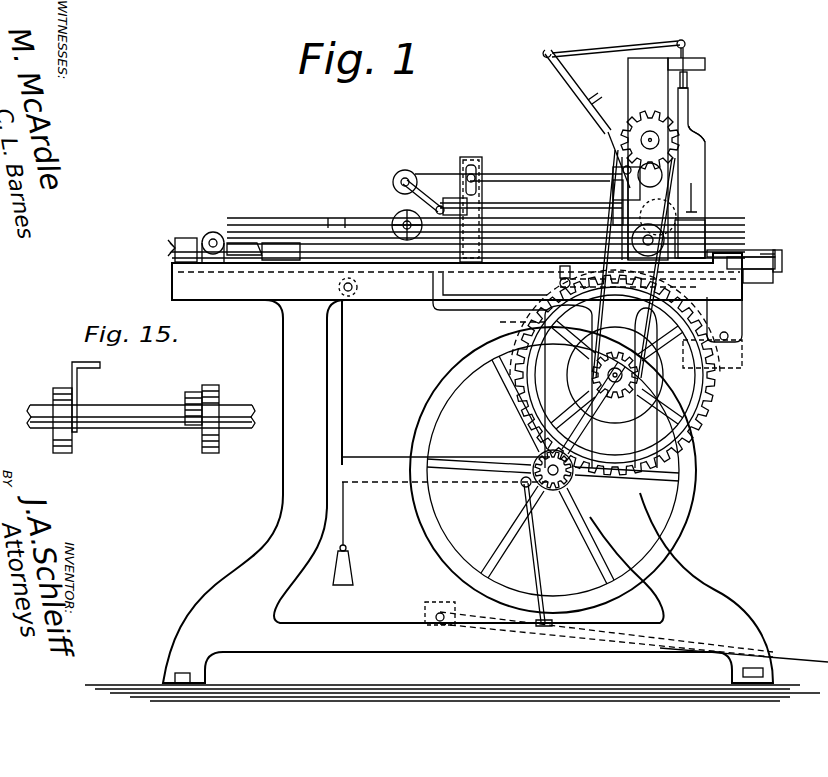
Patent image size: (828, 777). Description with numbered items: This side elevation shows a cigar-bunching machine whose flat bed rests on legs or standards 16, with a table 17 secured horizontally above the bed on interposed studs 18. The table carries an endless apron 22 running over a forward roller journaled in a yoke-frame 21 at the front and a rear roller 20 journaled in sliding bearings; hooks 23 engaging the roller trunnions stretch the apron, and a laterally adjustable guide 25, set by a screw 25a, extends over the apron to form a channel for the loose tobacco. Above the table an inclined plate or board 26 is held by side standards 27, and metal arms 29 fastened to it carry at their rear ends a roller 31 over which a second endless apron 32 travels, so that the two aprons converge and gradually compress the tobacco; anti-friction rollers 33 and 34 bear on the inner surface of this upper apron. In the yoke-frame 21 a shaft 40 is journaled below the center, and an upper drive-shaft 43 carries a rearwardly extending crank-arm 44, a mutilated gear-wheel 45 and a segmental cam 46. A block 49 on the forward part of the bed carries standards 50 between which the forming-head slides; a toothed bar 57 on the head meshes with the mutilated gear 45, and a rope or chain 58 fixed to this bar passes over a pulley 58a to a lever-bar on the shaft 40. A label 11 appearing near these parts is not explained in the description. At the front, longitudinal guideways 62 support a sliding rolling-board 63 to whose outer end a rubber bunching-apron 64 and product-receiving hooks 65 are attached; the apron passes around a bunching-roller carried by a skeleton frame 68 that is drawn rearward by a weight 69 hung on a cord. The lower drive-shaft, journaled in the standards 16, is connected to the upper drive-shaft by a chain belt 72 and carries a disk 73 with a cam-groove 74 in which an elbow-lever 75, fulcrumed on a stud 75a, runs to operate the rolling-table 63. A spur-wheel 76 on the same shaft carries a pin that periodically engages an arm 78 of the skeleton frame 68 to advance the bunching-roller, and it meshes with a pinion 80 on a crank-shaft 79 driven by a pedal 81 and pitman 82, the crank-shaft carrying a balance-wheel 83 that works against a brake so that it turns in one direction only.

In FIG. 1, the legs or standards 16 is at (452, 477).
In FIG. 1, the table 17 is at (362, 238).
In FIG. 1, the studs 18 is at (586, 119).
In FIG. 1, the rear roller 20 is at (210, 232).
In FIG. 1, the yoke-frame 21 is at (663, 159).
In FIG. 1, the endless apron 22 is at (220, 232).
In FIG. 1, the hooks 23 is at (190, 236).
In FIG. 1, the guide 25 is at (486, 215).
In FIG. 1, the screw 25a is at (396, 221).
In FIG. 1, the plate or board 26 is at (531, 206).
In FIG. 1, the side standards 27 is at (482, 158).
In FIG. 1, the metal arms 29 is at (540, 189).
In FIG. 1, the rear roller 31 is at (400, 170).
In FIG. 1, the endless apron 32 is at (590, 171).
In FIG. 1, the anti-friction roller 33 is at (612, 192).
In FIG. 1, the anti-friction roller 34 is at (423, 197).
In FIG. 1, the shaft 40 is at (624, 170).
In FIG. 1, the upper drive-shaft 43 is at (650, 140).
In FIG. 15, the upper drive-shaft 43 is at (141, 407).
In FIG. 15, the crank-arm 44 is at (72, 364).
In FIG. 15, the mutilated gear-wheel 45 is at (222, 398).
In FIG. 15, the segmental cam 46 is at (192, 390).
In FIG. 1, the block 49 is at (716, 254).
In FIG. 1, the standard 50 is at (706, 150).
In FIG. 1, the toothed bar 57 is at (690, 93).
In FIG. 1, the cylinder shoulder 11 is at (697, 120).
In FIG. 1, the rope or chain 58 is at (616, 37).
In FIG. 1, the pulley 58a is at (686, 44).
In FIG. 1, the guideways 62 is at (763, 280).
In FIG. 1, the rolling-board 63 is at (751, 264).
In FIG. 1, the bunching-apron 64 is at (768, 248).
In FIG. 1, the hooks 65 is at (784, 258).
In FIG. 1, the skeleton frame 68 is at (490, 303).
In FIG. 1, the weight 69 is at (354, 533).
In FIG. 1, the belt 72 is at (570, 280).
In FIG. 1, the disk or solid wheel 73 is at (600, 378).
In FIG. 1, the cam-groove 74 is at (560, 386).
In FIG. 1, the elbow-lever 75 is at (726, 319).
In FIG. 1, the stud 75a is at (729, 354).
In FIG. 1, the spur-wheel 76 is at (726, 392).
In FIG. 1, the arm 78 is at (630, 318).
In FIG. 1, the crank-shaft 79 is at (590, 480).
In FIG. 1, the pinion 80 is at (535, 462).
In FIG. 1, the pedal 81 is at (790, 656).
In FIG. 1, the pitman 82 is at (563, 551).
In FIG. 1, the balance-wheel 83 is at (440, 392).